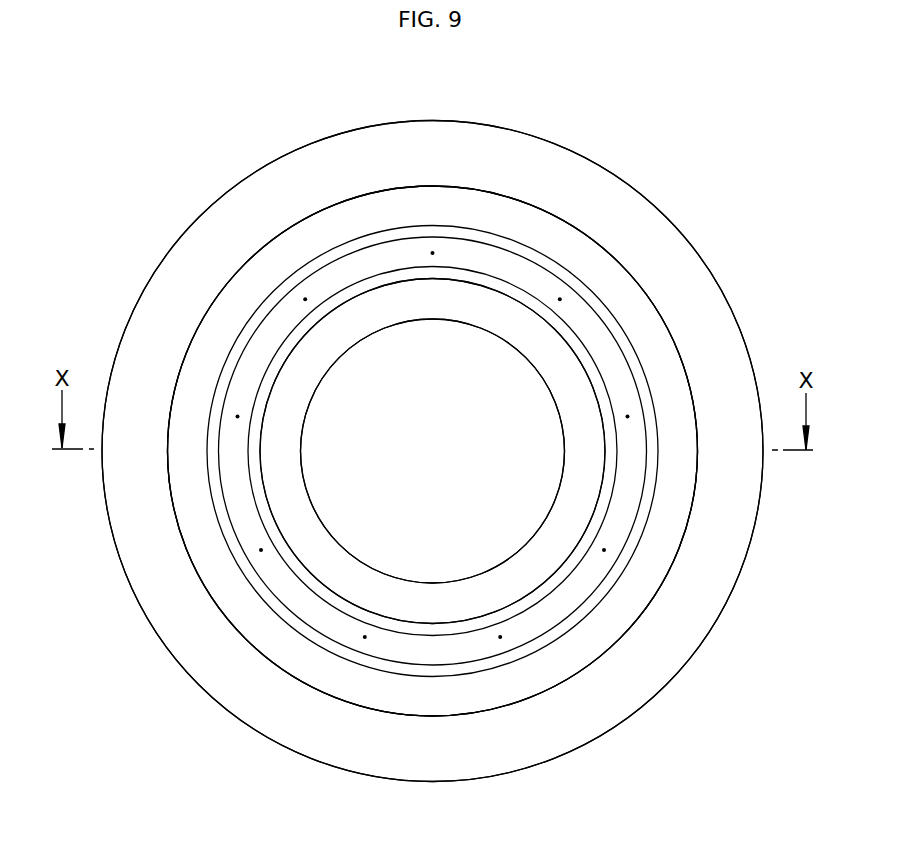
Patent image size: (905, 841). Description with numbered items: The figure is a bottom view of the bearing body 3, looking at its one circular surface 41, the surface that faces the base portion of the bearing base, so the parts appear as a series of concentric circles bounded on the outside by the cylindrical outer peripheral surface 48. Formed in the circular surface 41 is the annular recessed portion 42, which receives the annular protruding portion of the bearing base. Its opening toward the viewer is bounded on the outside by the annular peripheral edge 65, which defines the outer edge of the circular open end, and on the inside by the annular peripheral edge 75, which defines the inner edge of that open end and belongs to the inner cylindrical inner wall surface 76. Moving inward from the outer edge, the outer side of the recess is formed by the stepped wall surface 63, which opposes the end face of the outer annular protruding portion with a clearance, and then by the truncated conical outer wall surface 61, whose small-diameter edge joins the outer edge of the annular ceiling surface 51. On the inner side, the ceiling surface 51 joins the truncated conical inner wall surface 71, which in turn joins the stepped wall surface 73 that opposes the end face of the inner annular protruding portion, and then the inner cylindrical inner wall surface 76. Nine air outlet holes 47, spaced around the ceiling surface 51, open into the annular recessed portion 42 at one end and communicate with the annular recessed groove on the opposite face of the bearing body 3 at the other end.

The bearing body 3 is at (162, 648).
The one circular surface 41 is at (628, 692).
The annular recessed portion 42 is at (282, 668).
The air outlet holes 47 is at (560, 299).
The cylindrical outer peripheral surface 48 is at (233, 182).
The annular ceiling surface 51 is at (500, 270).
The truncated conical outer wall surface 61 is at (627, 355).
The stepped wall surface 63 is at (645, 587).
The annular peripheral edge 65 is at (427, 717).
The truncated conical inner wall surface 71 is at (322, 308).
The stepped wall surface 73 is at (495, 318).
The annular peripheral edge 75 is at (553, 505).
The inner cylindrical inner wall surface 76 is at (333, 540).